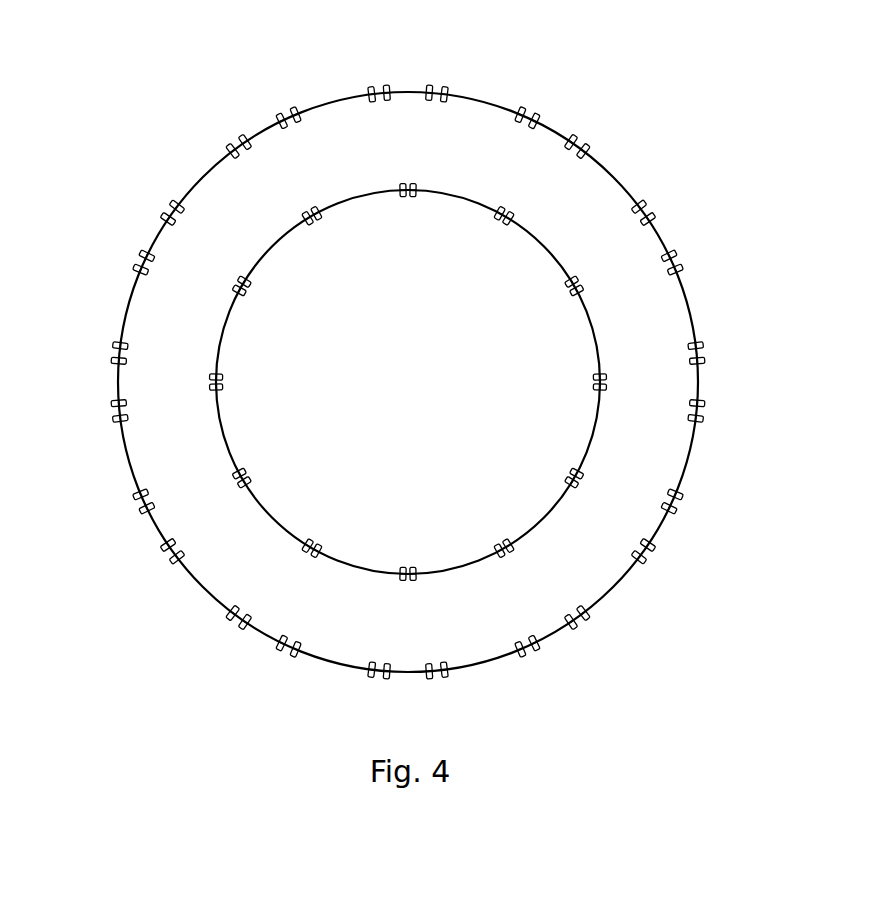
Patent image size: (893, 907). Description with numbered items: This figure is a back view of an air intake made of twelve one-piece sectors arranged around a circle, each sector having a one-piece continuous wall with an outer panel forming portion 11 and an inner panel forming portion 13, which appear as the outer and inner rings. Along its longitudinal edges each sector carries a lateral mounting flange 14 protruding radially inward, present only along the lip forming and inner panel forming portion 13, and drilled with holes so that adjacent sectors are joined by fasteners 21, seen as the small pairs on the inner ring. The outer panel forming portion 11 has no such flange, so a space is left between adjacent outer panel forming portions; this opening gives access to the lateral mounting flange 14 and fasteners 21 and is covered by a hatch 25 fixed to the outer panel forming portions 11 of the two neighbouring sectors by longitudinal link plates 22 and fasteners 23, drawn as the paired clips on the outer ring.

The outer panel forming portion 11 is at (352, 82).
The inner panel forming portion 13 is at (540, 246).
The lateral mounting flange 14 is at (202, 378).
The fasteners 21 is at (383, 379).
The longitudinal link plates 22 is at (248, 159).
The fasteners 23 is at (188, 219).
The hatch 25 is at (410, 350).